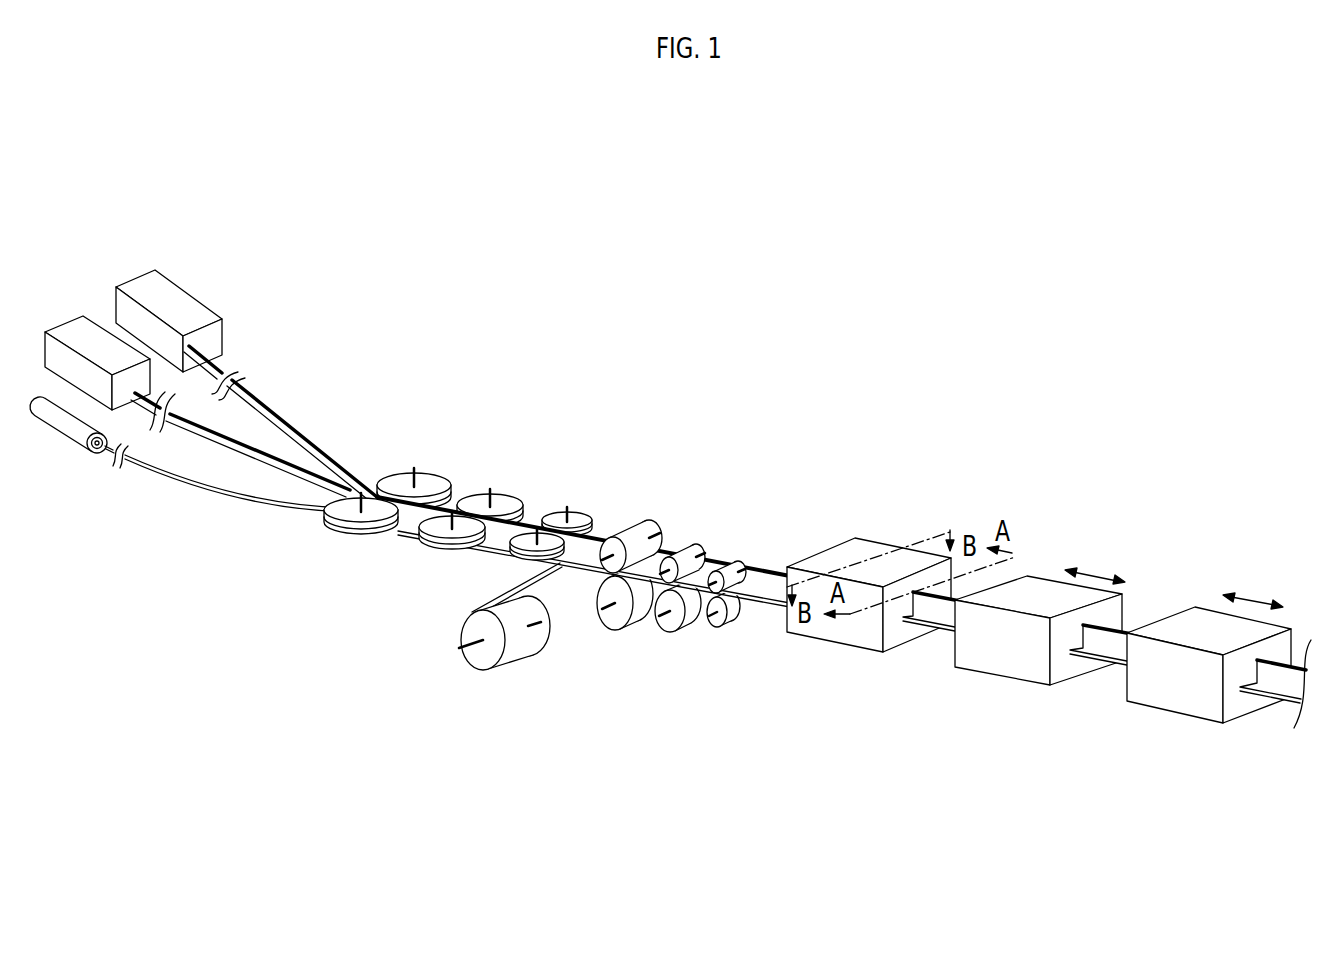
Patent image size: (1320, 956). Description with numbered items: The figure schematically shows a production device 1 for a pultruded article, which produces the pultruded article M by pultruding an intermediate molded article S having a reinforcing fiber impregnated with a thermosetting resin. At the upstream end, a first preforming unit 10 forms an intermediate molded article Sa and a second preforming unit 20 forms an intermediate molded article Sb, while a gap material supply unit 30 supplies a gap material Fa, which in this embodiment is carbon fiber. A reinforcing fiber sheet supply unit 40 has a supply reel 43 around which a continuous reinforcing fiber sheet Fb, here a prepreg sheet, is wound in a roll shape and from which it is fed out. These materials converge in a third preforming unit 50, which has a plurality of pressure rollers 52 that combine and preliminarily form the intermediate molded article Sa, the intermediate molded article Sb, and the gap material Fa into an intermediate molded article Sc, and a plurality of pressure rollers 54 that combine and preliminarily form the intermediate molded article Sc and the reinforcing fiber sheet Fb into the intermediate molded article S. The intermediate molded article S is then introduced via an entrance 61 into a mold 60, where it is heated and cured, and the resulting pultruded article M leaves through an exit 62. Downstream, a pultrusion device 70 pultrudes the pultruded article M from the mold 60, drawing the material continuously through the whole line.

The production device 1 is at (688, 388).
The first preforming unit 10 is at (181, 280).
The second preforming unit 20 is at (95, 312).
The gap material supply unit 30 is at (62, 450).
The reinforcing fiber sheet supply unit 40 is at (471, 680).
The supply reel 43 is at (460, 650).
The third preforming unit 50 is at (607, 460).
The pressure rollers 52 is at (431, 479).
The pressure rollers 54 is at (668, 599).
The mold 60 is at (878, 530).
The entrance 61 is at (772, 613).
The exit 62 is at (898, 623).
The pultrusion device 70 is at (1044, 565).
The intermediate molded article Sa is at (294, 438).
The intermediate molded article Sb is at (242, 447).
The intermediate molded article Sc is at (577, 550).
The gap material Fa is at (164, 473).
The reinforcing fiber sheet Fb is at (545, 582).
The intermediate molded article S is at (782, 573).
The pultruded article M is at (940, 633).